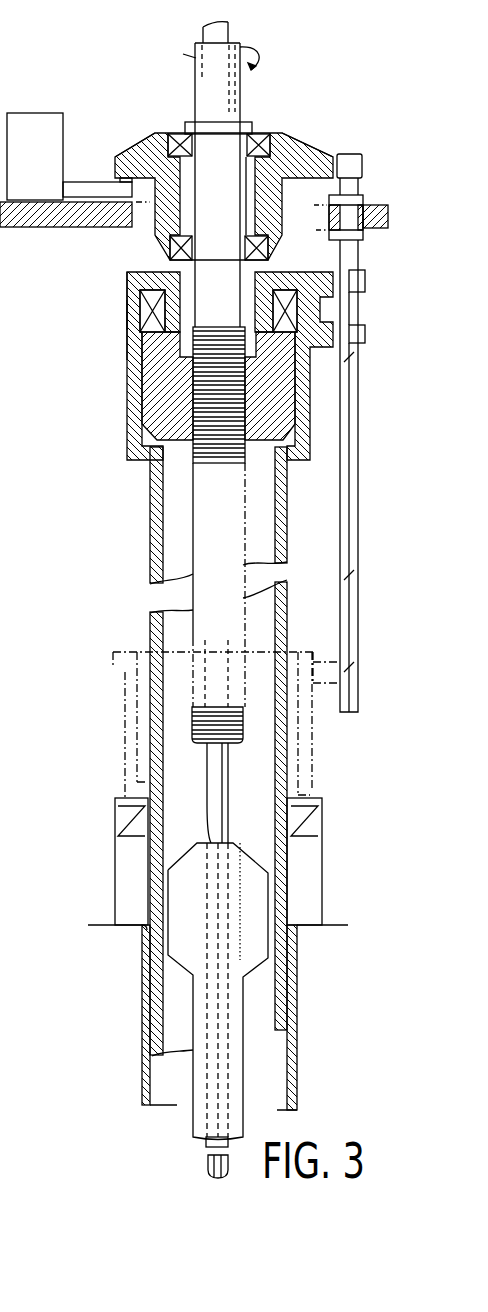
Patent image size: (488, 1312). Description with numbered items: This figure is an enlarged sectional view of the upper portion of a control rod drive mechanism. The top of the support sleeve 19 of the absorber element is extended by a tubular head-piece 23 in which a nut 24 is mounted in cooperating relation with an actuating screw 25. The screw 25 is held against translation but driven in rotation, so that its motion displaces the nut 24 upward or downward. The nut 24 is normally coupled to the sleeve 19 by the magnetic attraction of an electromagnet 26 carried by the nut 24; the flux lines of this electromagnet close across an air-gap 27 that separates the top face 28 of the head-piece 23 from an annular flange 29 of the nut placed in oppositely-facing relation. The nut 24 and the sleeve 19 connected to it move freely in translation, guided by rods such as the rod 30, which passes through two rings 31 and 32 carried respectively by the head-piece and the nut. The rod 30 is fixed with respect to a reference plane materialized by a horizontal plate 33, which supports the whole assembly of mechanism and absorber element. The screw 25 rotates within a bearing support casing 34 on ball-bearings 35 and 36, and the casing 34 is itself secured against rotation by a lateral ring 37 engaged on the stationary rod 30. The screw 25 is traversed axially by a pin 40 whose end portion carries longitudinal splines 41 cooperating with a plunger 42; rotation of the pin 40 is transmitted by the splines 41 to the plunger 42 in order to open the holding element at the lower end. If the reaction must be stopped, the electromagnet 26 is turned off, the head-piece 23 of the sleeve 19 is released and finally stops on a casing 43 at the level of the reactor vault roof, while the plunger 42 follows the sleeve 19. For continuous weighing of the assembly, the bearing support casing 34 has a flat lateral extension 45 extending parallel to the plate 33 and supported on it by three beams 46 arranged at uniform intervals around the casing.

The support sleeve 19 is at (157, 493).
The tubular head-piece 23 is at (127, 443).
The nut 24 is at (160, 393).
The actuating screw 25 is at (192, 712).
The electromagnet 26 is at (152, 290).
The air-gap 27 is at (133, 310).
The top face 28 is at (128, 326).
The annular flange 29 is at (127, 293).
The rod 30 is at (352, 444).
The ring 31 is at (366, 335).
The ring 32 is at (365, 283).
The horizontal plate 33 is at (372, 207).
The bearing support casing 34 is at (275, 168).
The ball-bearing 35 is at (256, 133).
The ball-bearing 36 is at (170, 246).
The lateral ring 37 is at (362, 157).
The pin 40 is at (220, 32).
The longitudinal splines 41 is at (222, 831).
The plunger 42 is at (195, 1058).
The casing 43 is at (127, 849).
The flat lateral extension 45 is at (136, 162).
The beams 46 is at (99, 184).